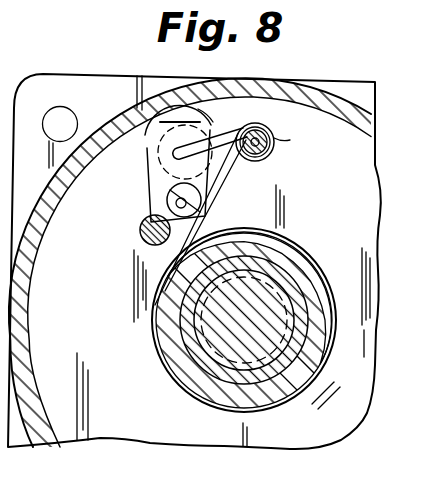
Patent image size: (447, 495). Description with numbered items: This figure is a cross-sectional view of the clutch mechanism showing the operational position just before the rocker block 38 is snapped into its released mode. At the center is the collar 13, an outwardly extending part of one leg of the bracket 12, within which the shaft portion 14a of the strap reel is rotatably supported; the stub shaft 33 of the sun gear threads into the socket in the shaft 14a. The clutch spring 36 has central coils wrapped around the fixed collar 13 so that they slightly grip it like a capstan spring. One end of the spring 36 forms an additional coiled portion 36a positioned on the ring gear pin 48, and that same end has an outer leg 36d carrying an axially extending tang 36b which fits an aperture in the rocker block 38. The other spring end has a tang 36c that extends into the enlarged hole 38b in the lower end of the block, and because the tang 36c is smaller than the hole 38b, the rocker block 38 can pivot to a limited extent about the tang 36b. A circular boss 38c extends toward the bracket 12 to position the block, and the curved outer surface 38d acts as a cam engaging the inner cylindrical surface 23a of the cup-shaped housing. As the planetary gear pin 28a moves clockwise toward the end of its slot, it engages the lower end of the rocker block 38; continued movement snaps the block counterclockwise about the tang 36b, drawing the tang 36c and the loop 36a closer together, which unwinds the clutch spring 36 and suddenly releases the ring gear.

The bracket 12 is at (361, 88).
The collar 13 is at (325, 302).
The shaft portion 14a is at (305, 412).
The inner cylindrical surface 23a is at (30, 278).
The planetary gear pin 28a is at (136, 240).
The stub shaft 33 is at (193, 330).
The clutch spring 36 is at (305, 237).
The coiled portion 36a is at (290, 140).
The tang 36b is at (173, 156).
The tang 36c is at (141, 217).
The outer leg 36d is at (228, 132).
The rocker block 38 is at (136, 118).
The enlarged hole 38b is at (165, 198).
The circular boss 38c is at (177, 106).
The outer surface 38d is at (201, 110).
The ring gear pin 48 is at (271, 152).